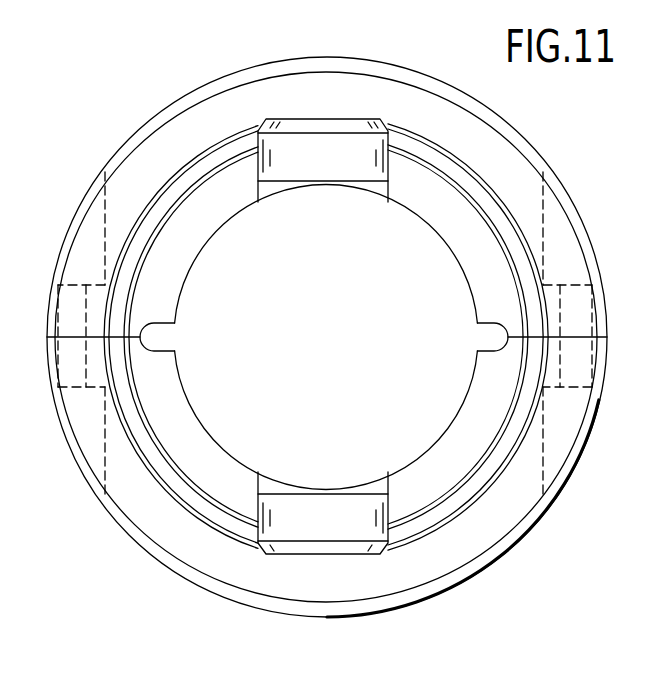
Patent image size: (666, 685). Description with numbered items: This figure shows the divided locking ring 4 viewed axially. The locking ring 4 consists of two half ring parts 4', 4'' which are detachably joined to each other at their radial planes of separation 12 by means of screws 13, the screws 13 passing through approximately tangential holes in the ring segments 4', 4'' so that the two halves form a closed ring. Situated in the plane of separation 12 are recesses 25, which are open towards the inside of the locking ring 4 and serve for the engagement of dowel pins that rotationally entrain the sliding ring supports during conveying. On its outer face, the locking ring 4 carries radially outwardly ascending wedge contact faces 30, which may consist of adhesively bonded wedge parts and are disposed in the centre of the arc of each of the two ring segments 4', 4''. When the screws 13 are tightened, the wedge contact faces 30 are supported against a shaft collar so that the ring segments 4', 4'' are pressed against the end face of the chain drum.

The locking ring 4 is at (327, 337).
The half ring part 4' is at (331, 319).
The half ring part 4'' is at (340, 367).
The plane of separation 12 is at (57, 338).
The screw 13 is at (70, 308).
The recess 25 is at (168, 324).
The wedge contact face 30 is at (351, 147).